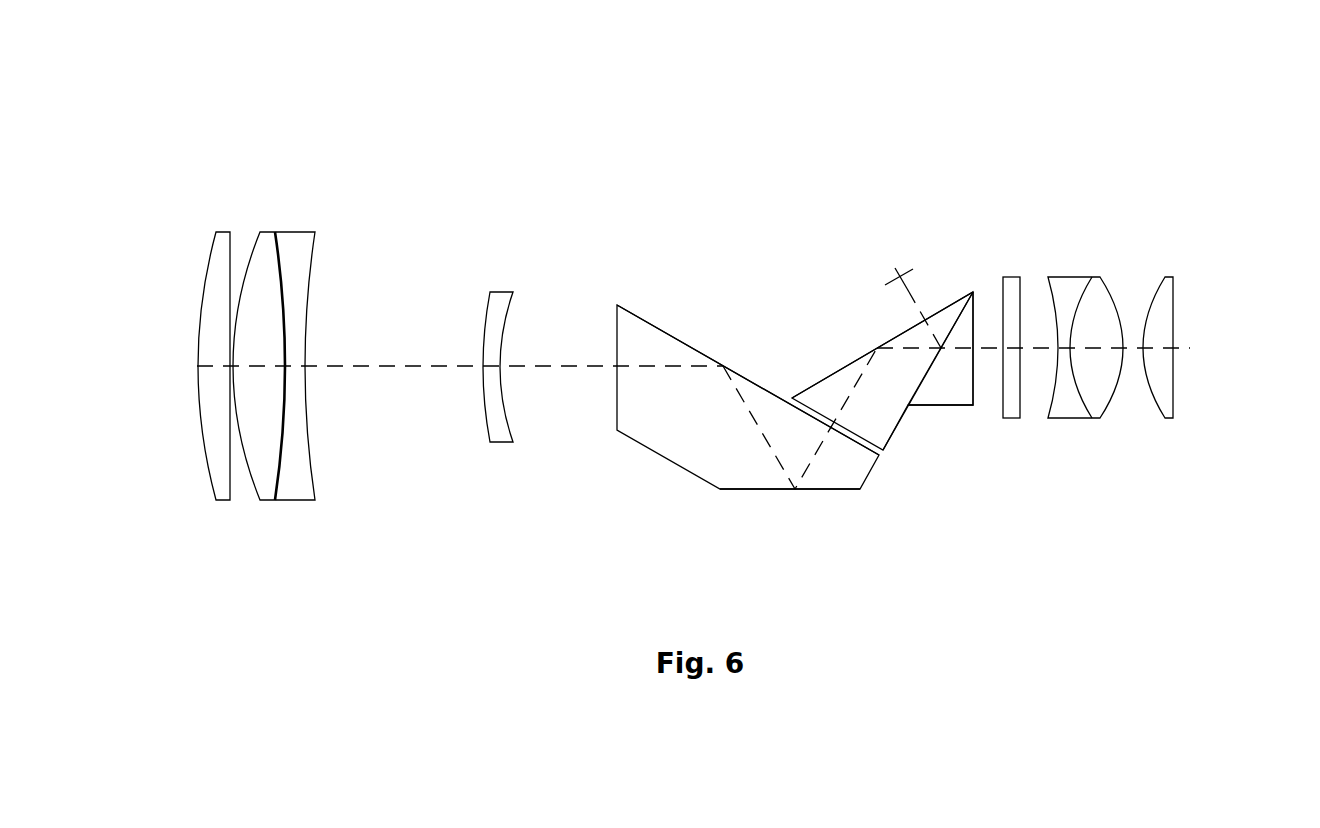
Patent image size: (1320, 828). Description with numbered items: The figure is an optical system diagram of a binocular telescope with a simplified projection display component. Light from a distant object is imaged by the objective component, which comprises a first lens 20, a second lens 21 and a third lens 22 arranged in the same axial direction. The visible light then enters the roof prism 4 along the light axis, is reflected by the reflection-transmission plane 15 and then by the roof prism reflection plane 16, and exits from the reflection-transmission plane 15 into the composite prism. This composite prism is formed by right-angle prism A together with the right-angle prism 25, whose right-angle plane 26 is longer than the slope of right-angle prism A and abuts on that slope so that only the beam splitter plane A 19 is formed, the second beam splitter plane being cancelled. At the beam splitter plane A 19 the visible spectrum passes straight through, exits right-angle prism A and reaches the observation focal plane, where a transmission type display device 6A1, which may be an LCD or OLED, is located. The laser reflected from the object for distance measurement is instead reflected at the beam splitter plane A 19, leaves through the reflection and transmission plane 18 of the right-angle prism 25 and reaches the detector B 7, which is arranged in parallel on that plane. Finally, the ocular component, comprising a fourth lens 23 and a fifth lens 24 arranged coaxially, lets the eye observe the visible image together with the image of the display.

The first lens 20 is at (172, 296).
The second lens 21 is at (265, 296).
The third lens 22 is at (461, 267).
The roof prism 4 is at (700, 291).
The reflection-transmission plane of roof prism 15 is at (736, 274).
The roof prism reflection plane 16 is at (758, 546).
The reflection and transmission plane 18 is at (865, 271).
The right-angle prism 25 is at (823, 245).
The right-angle plane 26 is at (928, 449).
The beam splitter plane A 19 is at (969, 448).
The detector B 7 is at (921, 220).
The transmission type display device 6A1 is at (1039, 255).
The fourth lens 23 is at (1105, 255).
The fifth lens 24 is at (1217, 255).